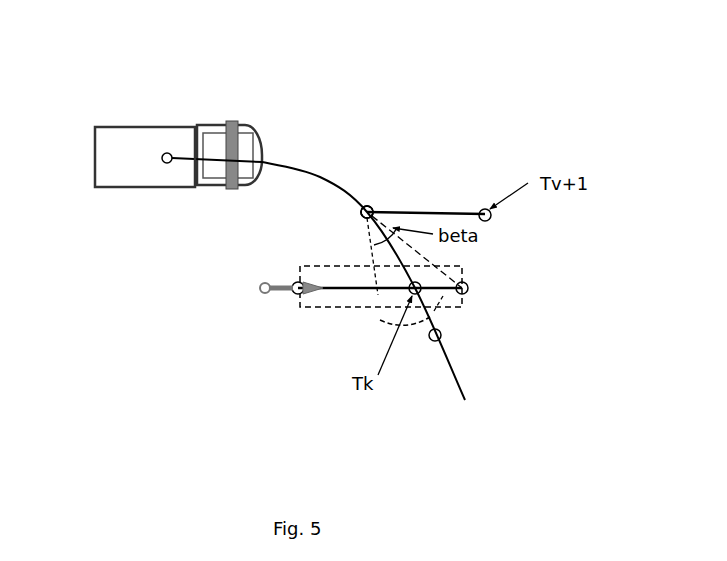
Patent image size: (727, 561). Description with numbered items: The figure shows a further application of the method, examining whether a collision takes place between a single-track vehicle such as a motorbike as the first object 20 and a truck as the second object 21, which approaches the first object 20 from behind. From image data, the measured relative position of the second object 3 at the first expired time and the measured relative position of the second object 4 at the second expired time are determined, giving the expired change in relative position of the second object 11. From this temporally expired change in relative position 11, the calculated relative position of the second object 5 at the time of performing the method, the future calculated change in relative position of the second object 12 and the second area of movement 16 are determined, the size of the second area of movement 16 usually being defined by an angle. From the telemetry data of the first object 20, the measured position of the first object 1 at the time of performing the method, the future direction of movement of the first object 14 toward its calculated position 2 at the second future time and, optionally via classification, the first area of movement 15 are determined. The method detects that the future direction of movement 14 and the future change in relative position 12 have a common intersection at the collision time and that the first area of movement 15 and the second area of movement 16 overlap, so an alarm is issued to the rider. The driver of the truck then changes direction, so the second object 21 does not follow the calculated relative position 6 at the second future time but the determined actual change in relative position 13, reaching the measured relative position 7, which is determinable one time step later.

The second object 21 is at (170, 122).
The measured relative position of second object t1 3 is at (163, 163).
The expired change in relative position of the second object 11 is at (318, 176).
The measured relative position of second object t2 4 is at (369, 206).
The calculated relative position of second object Tv=T1 5 is at (373, 208).
The first area of movement of first object 15 is at (393, 250).
The determined actual change in relative position of the second object 13 is at (442, 211).
The measured relative position second object T2 7 is at (492, 219).
The second area of movement of second object 16 is at (440, 276).
The future calculated change in relative position of the second object 12 is at (440, 321).
The future direction of movement of the first object 14 is at (393, 293).
The measured position of first object Tv=T1 1 is at (293, 283).
The first object 20 is at (262, 298).
The calculated position of first object T2 2 is at (469, 292).
The calculated relative position of second object T2 6 is at (433, 343).